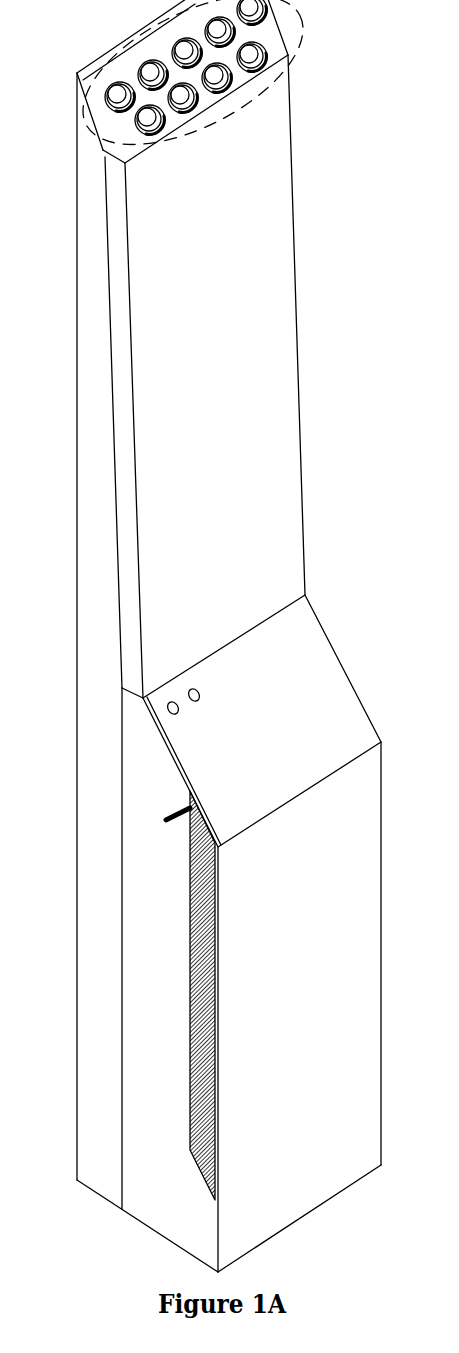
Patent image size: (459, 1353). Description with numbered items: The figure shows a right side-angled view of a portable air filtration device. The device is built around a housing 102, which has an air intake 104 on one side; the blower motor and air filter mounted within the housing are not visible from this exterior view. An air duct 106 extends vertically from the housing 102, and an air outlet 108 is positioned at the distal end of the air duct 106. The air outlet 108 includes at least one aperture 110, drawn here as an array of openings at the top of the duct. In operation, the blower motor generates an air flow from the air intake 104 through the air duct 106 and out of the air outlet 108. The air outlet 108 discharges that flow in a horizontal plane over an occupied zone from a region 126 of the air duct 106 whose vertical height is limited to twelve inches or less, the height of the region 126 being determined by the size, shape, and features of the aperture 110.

The housing 102 is at (338, 866).
The air intake 104 is at (210, 914).
The air duct 106 is at (197, 333).
The air outlet 108 is at (318, 17).
The aperture 110 is at (257, 63).
The region 126 is at (100, 97).